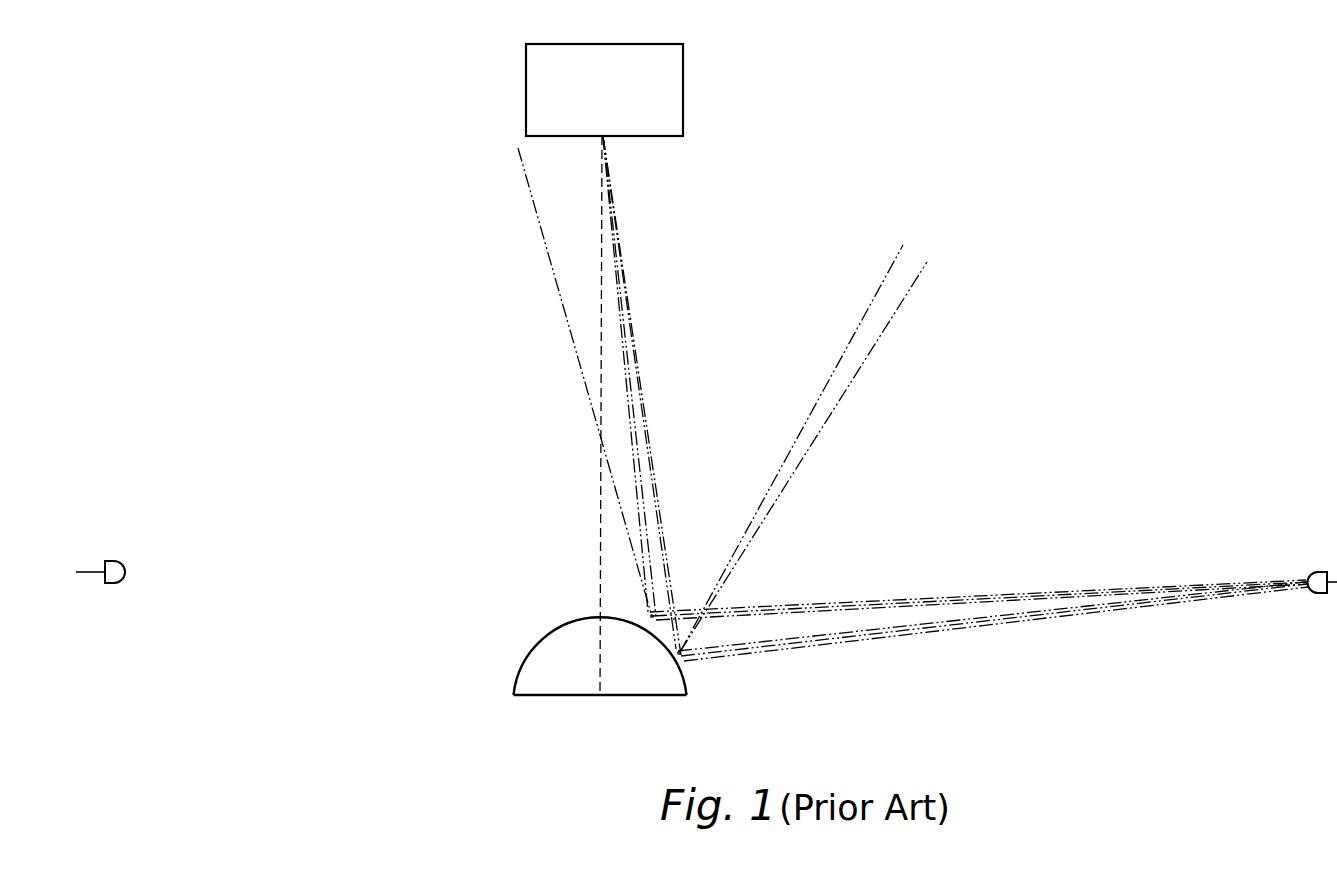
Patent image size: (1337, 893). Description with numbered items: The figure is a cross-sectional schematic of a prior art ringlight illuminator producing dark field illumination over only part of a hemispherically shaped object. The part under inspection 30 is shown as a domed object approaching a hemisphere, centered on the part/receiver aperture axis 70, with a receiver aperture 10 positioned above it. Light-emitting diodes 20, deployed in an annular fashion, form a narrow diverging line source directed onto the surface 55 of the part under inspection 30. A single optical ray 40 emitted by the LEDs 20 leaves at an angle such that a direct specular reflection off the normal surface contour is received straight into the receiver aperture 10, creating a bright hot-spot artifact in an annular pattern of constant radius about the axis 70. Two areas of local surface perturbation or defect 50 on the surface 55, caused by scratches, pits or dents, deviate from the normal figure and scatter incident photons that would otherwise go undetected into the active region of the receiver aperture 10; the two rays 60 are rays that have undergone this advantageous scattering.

The receiver aperture 10 is at (683, 91).
The light-emitting diodes 20 is at (128, 572).
The part under inspection 30 is at (578, 673).
The optical ray 40 is at (650, 460).
The local surface perturbation or defect 50 is at (652, 617).
The surface 55 is at (540, 621).
The rays 60 is at (637, 368).
The part/receiver aperture axis 70 is at (600, 530).